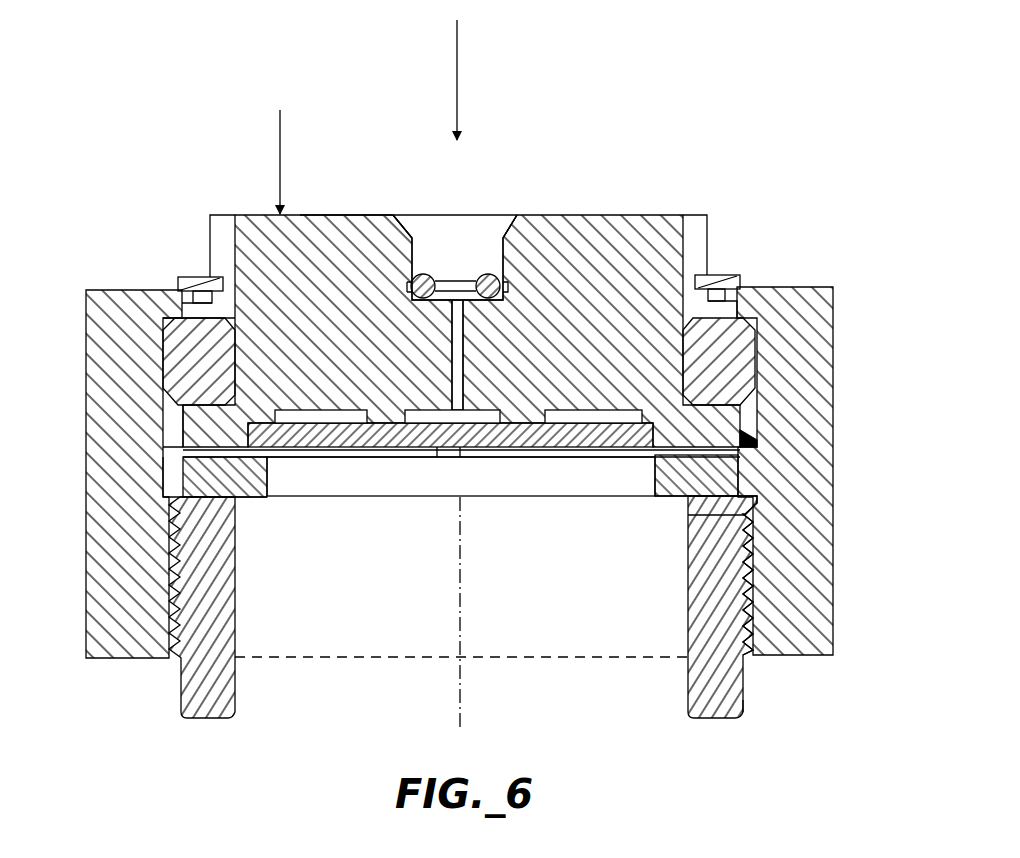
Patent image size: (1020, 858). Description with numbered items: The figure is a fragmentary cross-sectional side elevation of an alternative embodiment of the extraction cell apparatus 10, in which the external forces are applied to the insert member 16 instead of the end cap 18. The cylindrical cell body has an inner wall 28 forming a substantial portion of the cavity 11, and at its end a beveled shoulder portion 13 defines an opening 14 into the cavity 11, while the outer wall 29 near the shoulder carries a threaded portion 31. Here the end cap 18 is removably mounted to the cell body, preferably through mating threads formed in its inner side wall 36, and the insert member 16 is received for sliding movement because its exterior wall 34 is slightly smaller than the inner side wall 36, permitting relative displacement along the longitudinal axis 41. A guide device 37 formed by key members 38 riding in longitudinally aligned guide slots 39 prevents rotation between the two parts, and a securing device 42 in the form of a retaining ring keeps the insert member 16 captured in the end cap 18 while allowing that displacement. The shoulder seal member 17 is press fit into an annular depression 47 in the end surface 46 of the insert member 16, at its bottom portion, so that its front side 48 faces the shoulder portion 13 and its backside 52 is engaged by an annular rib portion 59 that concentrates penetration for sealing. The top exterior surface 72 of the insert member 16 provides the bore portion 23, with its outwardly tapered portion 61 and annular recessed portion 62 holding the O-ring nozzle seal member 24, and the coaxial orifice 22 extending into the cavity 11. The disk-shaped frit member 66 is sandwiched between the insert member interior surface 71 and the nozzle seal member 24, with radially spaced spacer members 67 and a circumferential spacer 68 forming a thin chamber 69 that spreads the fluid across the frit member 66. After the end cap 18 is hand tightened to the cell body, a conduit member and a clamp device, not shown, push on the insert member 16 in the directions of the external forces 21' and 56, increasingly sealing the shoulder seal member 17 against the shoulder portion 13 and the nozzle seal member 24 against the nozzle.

The extraction cell apparatus 10 is at (736, 151).
The cavity 11 is at (519, 625).
The shoulder portion 13 is at (690, 493).
The opening 14 is at (393, 599).
The insert member 16 is at (641, 212).
The shoulder seal member 17 is at (745, 458).
The end cap 18 is at (834, 351).
The external force 21' is at (489, 80).
The orifice 22 is at (462, 320).
The bore portion 23 is at (503, 262).
The nozzle seal member 24 is at (427, 274).
The inner wall 28 is at (688, 540).
The outer wall 29 is at (743, 697).
The threaded portion 31 is at (749, 573).
The insert member exterior wall 34 is at (745, 413).
The inner side wall 36 is at (183, 422).
The guide device 37 is at (124, 370).
The key members 38 is at (166, 304).
The guide slots 39 is at (166, 404).
The longitudinal axis 41 is at (462, 716).
The securing device 42 is at (203, 276).
The end surface 46 is at (180, 478).
The annular depression 47 is at (748, 480).
The front side 48 is at (253, 490).
The seal backside 52 is at (272, 445).
The external force 56 is at (281, 130).
The annular rib portion 59 is at (560, 458).
The tapered portion 61 is at (500, 222).
The annular recessed portion 62 is at (425, 235).
The frit member 66 is at (447, 440).
The spacer members 67 is at (448, 440).
The circumferential spacer 68 is at (592, 424).
The chamber 69 is at (612, 410).
The insert member interior surface 71 is at (350, 412).
The top exterior surface 72 is at (368, 214).